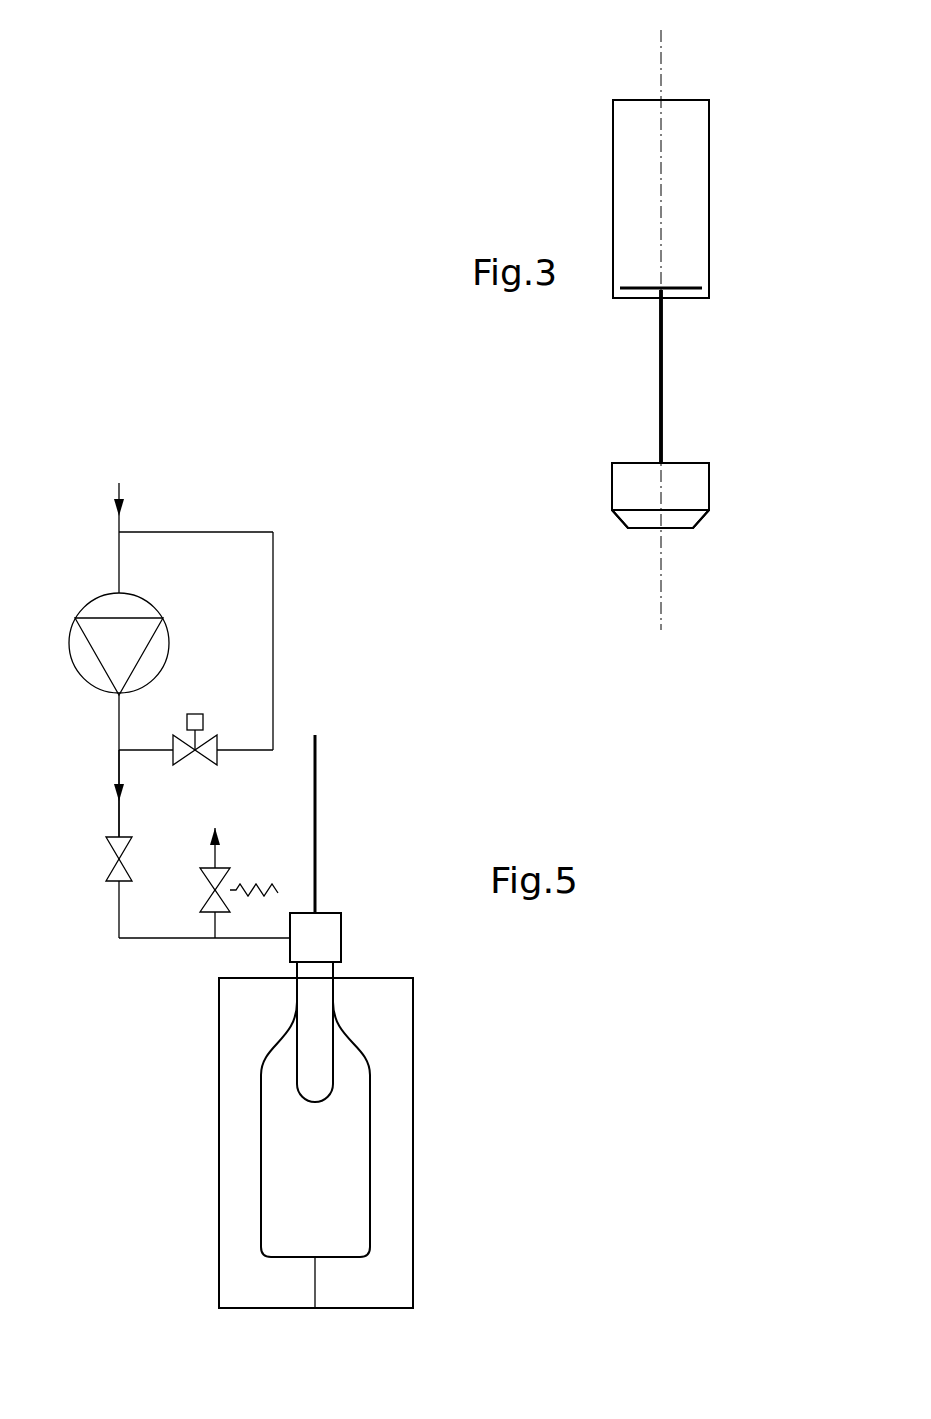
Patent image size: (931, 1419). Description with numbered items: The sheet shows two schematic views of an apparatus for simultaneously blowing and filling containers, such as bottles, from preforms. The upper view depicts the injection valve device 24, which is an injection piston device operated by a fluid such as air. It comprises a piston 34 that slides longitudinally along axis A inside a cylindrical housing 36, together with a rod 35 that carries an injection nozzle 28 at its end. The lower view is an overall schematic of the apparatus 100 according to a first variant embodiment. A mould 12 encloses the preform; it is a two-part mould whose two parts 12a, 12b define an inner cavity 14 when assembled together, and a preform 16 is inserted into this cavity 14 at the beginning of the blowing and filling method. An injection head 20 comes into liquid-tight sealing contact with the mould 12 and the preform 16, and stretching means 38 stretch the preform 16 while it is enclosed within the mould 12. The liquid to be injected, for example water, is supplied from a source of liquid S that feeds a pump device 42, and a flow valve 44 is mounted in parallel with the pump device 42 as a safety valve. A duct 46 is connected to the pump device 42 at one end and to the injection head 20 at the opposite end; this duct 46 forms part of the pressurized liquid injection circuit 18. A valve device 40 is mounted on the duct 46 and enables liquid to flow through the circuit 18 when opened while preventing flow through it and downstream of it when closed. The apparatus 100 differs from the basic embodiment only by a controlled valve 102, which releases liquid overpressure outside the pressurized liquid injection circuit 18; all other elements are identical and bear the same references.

In FIG. 5, the mould 12 is at (450, 1269).
In FIG. 5, the first mould part 12a is at (233, 1207).
In FIG. 5, the second mould part 12b is at (395, 1200).
In FIG. 5, the inner cavity 14 is at (280, 1150).
In FIG. 5, the preform 16 is at (320, 1072).
In FIG. 5, the pressurized liquid injection circuit 18 is at (149, 961).
In FIG. 5, the injection head 20 is at (341, 925).
In FIG. 3, the injection valve device 24 is at (784, 231).
In FIG. 3, the injection nozzle 28 is at (709, 483).
In FIG. 3, the piston 34 is at (708, 365).
In FIG. 3, the rod 35 is at (661, 397).
In FIG. 3, the cylindrical housing 36 is at (709, 167).
In FIG. 5, the stretching means 38 is at (340, 786).
In FIG. 5, the valve device 40 is at (113, 862).
In FIG. 5, the pump device 42 is at (195, 601).
In FIG. 5, the flow valve 44 is at (217, 710).
In FIG. 5, the duct 46 is at (119, 813).
In FIG. 5, the apparatus 100 is at (378, 598).
In FIG. 5, the controlled valve 102 is at (251, 875).
In FIG. 3, the axis A is at (661, 40).
In FIG. 5, the source of liquid S is at (117, 492).